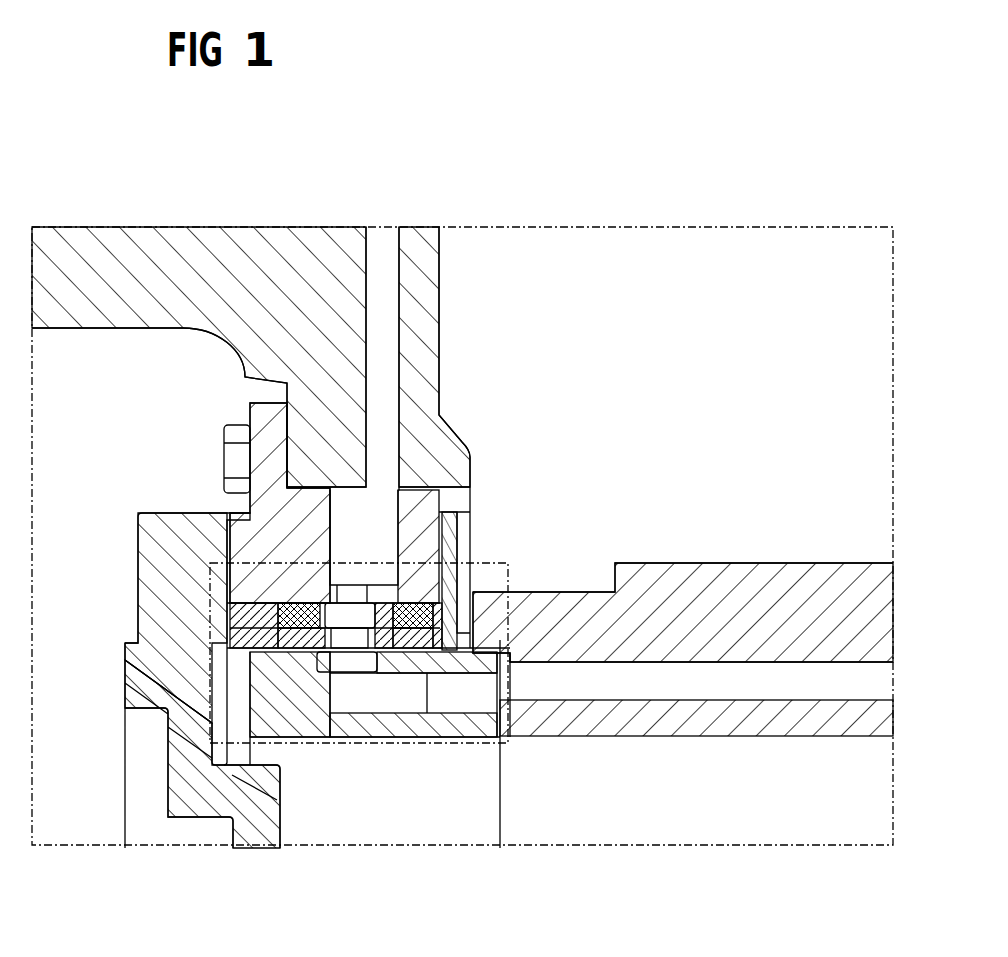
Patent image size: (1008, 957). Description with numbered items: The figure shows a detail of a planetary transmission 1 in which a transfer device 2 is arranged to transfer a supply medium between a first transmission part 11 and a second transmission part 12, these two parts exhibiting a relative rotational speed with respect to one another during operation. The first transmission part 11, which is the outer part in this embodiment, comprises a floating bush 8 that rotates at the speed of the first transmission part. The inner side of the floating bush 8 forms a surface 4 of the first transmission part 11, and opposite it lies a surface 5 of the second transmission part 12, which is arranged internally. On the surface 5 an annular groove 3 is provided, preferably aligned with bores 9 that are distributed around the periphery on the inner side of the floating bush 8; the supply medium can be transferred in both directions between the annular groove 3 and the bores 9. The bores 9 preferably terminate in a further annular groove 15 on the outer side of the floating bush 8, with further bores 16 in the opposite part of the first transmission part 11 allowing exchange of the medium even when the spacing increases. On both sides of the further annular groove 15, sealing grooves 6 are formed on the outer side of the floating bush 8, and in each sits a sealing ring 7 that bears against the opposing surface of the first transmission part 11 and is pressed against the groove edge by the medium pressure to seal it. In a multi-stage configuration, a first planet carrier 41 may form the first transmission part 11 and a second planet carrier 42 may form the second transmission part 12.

The planetary transmission 1 is at (779, 185).
The transfer device 2 is at (486, 552).
The annular groove 3 is at (345, 668).
The surface of the first transmission part 4 is at (215, 660).
The surface of the second transmission part 5 is at (220, 706).
The sealing groove 6 is at (310, 656).
The sealing ring 7 is at (284, 656).
The floating bush 8 is at (215, 624).
The bores 9 is at (372, 690).
The first transmission part 11 is at (126, 212).
The second transmission part 12 is at (800, 787).
The further annular groove 15 is at (345, 622).
The further bores 16 is at (367, 598).
The first planet carrier 41 is at (114, 308).
The second planet carrier 42 is at (698, 722).